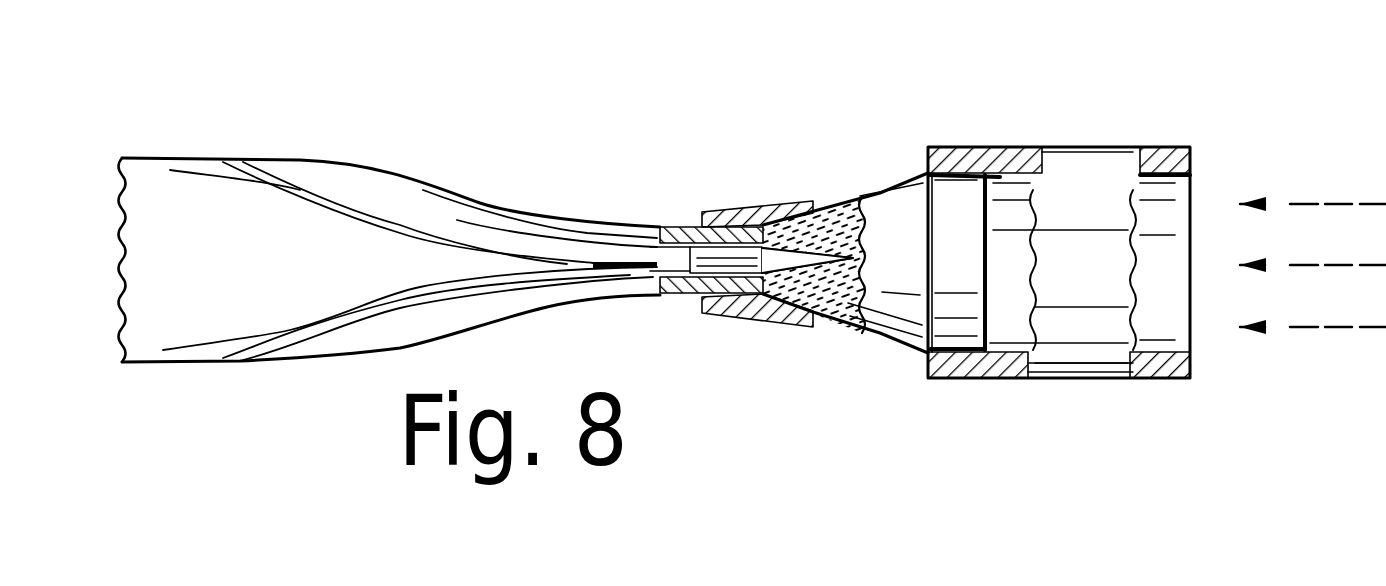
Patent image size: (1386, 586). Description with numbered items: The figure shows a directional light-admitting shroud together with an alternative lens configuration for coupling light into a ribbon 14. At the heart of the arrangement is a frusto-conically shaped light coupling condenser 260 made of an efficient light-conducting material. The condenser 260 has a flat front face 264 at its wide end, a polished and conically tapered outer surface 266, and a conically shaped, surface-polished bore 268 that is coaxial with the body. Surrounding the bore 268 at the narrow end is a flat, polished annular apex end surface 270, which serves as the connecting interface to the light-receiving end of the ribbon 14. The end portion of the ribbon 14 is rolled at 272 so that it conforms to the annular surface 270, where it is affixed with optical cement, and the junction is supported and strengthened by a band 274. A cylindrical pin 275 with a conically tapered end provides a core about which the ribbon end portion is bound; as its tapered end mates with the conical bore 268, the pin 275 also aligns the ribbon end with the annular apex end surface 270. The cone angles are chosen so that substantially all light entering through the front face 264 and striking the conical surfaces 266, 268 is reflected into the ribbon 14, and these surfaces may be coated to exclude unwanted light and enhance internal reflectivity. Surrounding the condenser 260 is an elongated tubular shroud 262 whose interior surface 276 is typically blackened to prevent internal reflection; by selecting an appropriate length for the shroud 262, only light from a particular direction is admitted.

The ribbon 14 is at (200, 313).
The light coupling condenser 260 is at (892, 345).
The tubular shroud 262 is at (1087, 366).
The front face 264 is at (985, 270).
The outer surface 266 is at (888, 200).
The bore 268 is at (820, 203).
The annular apex end surface 270 is at (683, 293).
The rolled end portion 272 is at (597, 237).
The band 274 is at (767, 317).
The cylindrical pin 275 is at (680, 227).
The interior surface 276 is at (1155, 147).